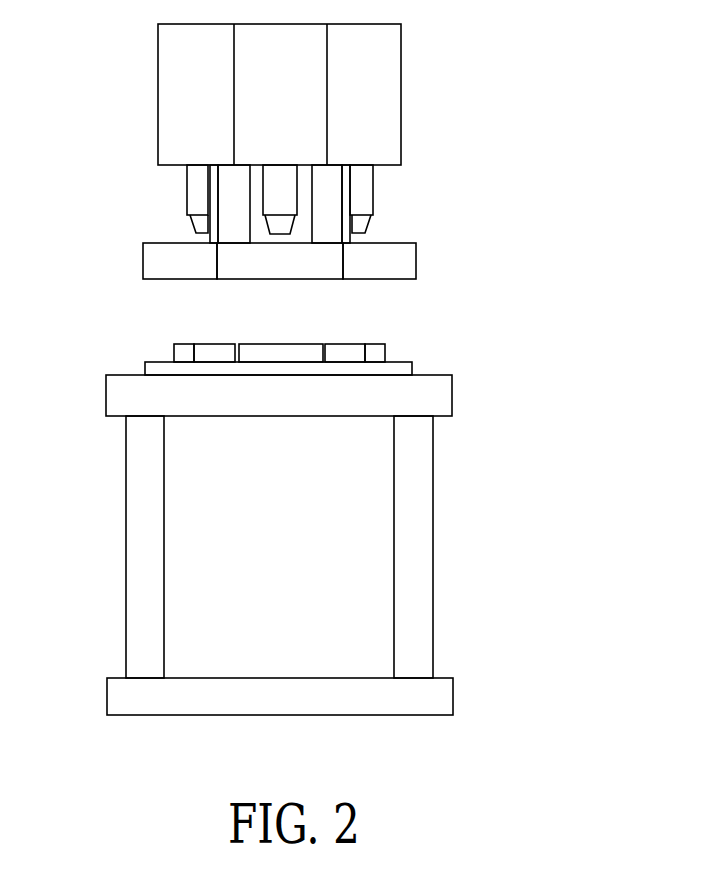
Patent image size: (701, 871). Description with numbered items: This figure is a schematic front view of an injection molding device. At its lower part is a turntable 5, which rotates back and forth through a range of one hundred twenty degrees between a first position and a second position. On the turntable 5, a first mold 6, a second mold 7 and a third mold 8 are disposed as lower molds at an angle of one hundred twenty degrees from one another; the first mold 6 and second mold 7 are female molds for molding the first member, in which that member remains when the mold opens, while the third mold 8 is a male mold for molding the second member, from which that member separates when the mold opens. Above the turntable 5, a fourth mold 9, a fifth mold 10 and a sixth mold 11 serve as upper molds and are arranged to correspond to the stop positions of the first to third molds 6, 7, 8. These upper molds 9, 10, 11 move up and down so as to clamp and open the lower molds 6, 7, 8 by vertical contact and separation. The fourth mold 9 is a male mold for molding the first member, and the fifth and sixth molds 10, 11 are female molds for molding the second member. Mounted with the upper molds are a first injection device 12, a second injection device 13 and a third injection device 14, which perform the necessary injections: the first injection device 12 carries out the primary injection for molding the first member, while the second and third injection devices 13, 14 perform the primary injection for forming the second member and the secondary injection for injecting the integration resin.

The turntable 5 is at (157, 368).
The first mold 6 is at (280, 353).
The second mold 7 is at (347, 353).
The third mold 8 is at (215, 353).
The fourth mold 9 is at (278, 263).
The fifth mold 10 is at (402, 262).
The sixth mold 11 is at (175, 263).
The first injection device 12 is at (283, 177).
The second injection device 13 is at (197, 193).
The third injection device 14 is at (363, 195).